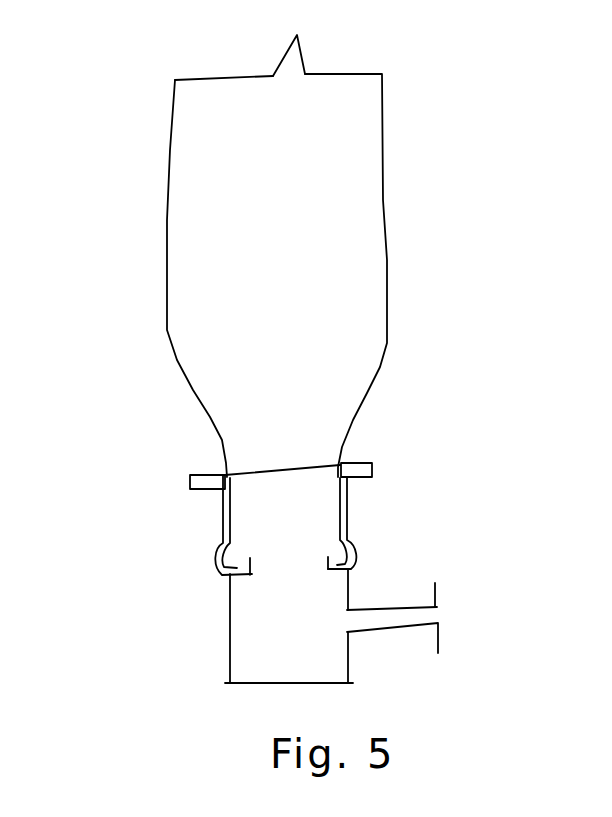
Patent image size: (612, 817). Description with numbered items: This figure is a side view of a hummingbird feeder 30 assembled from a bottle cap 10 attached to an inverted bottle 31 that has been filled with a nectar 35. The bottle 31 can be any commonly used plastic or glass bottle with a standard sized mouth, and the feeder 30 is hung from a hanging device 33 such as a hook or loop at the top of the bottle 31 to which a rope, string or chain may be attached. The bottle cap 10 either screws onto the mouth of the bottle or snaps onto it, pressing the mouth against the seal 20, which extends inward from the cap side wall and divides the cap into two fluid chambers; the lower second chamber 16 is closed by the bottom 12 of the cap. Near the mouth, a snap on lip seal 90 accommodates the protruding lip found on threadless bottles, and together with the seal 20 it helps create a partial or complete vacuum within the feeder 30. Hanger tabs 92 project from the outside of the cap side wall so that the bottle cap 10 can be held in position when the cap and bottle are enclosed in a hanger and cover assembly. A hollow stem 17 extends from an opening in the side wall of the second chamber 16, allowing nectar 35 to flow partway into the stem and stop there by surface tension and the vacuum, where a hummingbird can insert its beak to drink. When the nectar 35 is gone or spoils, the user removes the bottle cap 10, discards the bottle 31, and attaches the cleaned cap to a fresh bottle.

The hummingbird feeder 30 is at (294, 252).
The bottle 31 is at (383, 120).
The hanging device 33 is at (302, 50).
The nectar 35 is at (193, 210).
The hanger tabs 92 is at (190, 473).
The snap on lip seal 90 is at (358, 552).
The seal 20 is at (323, 573).
The bottle cap 10 is at (294, 607).
The second fluid chamber 16 is at (289, 626).
The bottom 12 is at (323, 685).
The hollow stem 17 is at (382, 603).